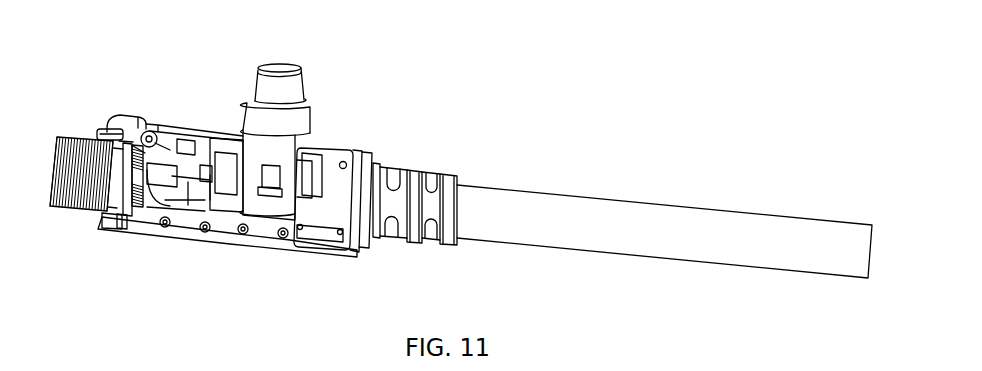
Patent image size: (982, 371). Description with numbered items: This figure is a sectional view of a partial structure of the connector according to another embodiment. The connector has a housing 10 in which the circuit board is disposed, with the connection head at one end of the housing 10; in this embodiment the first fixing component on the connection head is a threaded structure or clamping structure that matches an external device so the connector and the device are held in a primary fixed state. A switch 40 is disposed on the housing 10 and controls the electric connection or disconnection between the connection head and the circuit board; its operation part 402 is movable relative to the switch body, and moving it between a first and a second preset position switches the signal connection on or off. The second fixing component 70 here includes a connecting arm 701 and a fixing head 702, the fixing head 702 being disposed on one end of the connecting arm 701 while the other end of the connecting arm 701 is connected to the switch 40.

The housing 10 is at (345, 148).
The switch 40 is at (298, 115).
The operation part 402 is at (303, 70).
The second fixing component 70 is at (154, 103).
The connecting arm 701 is at (160, 127).
The fixing head 702 is at (97, 73).